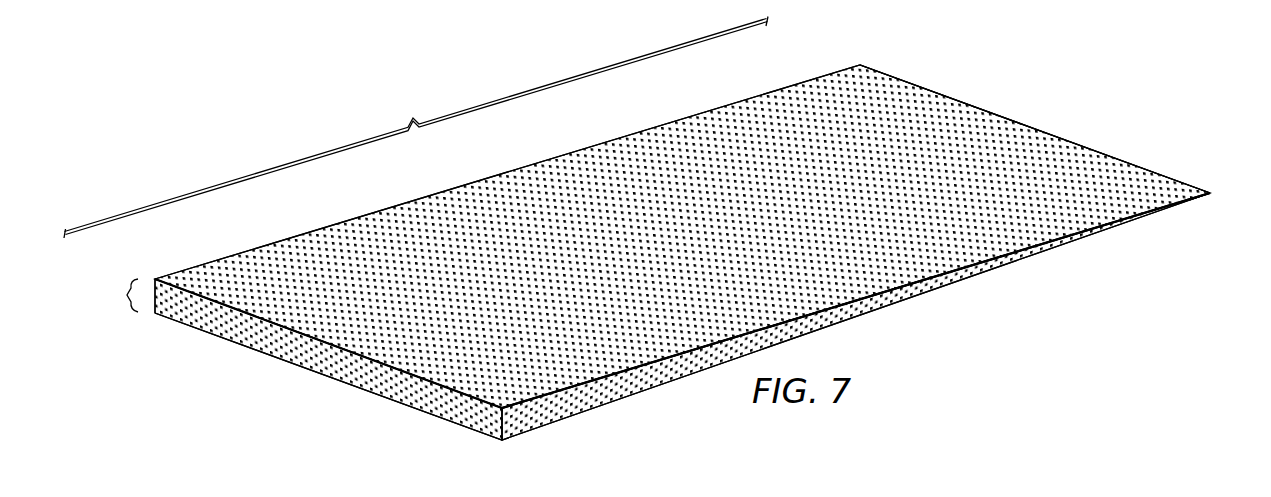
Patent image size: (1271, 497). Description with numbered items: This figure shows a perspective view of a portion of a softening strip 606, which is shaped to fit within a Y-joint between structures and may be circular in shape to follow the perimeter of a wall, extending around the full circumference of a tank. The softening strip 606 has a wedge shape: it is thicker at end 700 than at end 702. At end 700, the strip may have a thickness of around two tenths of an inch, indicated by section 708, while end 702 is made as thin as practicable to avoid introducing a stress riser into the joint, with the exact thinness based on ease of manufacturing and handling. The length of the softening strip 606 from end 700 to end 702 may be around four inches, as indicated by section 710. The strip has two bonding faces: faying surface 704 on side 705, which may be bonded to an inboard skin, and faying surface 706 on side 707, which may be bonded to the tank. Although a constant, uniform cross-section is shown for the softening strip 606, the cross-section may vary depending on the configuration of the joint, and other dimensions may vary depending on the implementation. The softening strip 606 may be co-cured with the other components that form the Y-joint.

The end 700 is at (348, 377).
The end 702 is at (1203, 188).
The faying surface 704 is at (553, 175).
The side 705 is at (878, 98).
The softening strip 606 is at (1033, 128).
The faying surface 706 is at (565, 418).
The side 707 is at (997, 263).
The section 708 is at (108, 296).
The section 710 is at (416, 128).